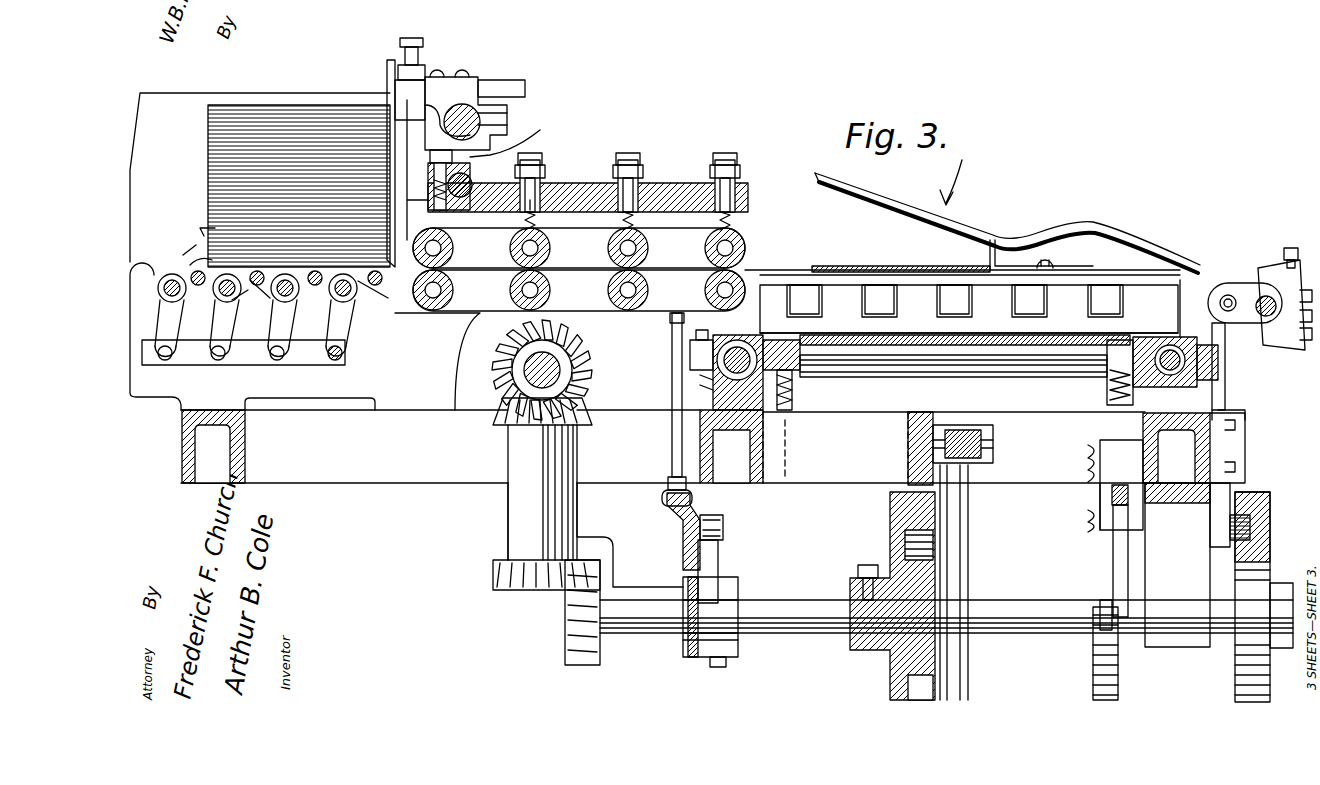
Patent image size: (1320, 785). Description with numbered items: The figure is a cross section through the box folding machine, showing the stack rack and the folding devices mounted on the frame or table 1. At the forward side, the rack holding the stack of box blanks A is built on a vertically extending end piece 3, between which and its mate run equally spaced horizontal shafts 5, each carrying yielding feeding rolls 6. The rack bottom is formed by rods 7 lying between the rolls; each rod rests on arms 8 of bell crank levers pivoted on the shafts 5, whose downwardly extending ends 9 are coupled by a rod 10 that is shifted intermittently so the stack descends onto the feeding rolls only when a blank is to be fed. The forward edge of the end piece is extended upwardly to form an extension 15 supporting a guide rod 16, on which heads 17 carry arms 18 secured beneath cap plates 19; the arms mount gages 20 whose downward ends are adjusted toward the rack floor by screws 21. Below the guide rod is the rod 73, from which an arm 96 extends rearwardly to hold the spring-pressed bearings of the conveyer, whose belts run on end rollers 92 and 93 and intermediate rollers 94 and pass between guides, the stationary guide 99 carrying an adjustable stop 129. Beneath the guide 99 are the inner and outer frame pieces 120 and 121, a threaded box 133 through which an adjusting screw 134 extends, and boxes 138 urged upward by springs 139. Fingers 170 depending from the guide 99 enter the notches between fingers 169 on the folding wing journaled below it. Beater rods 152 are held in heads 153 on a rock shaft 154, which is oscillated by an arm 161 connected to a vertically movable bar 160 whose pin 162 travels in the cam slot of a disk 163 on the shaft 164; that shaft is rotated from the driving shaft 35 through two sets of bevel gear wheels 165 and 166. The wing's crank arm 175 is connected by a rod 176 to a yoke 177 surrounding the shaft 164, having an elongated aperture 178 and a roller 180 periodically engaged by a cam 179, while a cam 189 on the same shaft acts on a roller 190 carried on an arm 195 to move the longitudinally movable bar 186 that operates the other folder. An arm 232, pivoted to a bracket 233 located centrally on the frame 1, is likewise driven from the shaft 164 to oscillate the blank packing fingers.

The frame or table 1 is at (440, 440).
The end piece 3 is at (637, 288).
The box blanks A is at (268, 108).
The shafts 5 is at (170, 283).
The feeding rolls 6 is at (256, 328).
The rods 7 is at (301, 262).
The arms of bell crank levers 8 is at (199, 287).
The downwardly extending ends 9 is at (255, 330).
The rod 10 is at (193, 360).
The upward extensions 15 is at (513, 134).
The guide rod 16 is at (458, 110).
The heads 17 is at (483, 112).
The arms 18 is at (516, 87).
The cap plates 19 is at (446, 72).
The gages 20 is at (393, 85).
The screws 21 is at (412, 42).
The driving shaft 35 is at (520, 365).
The rod 73 is at (460, 200).
The rollers 92 is at (579, 269).
The rollers 93 is at (706, 292).
The rollers 94 is at (608, 250).
The arm 96 is at (578, 200).
The guide 99 is at (752, 270).
The inner frame piece 120 is at (716, 391).
The outer frame piece 121 is at (1202, 345).
The stop 129 is at (988, 252).
The threaded box 133 is at (718, 375).
The adjusting screws 134 is at (973, 373).
The boxes 138 is at (798, 378).
The springs 139 is at (795, 398).
The beater rods 152 is at (1118, 232).
The heads 153 is at (1298, 268).
The rock shaft 154 is at (1267, 318).
The vertically movable bar 160 is at (1226, 392).
The arm 161 is at (1238, 298).
The pin 162 is at (1240, 520).
The disk 163 is at (1252, 568).
The shaft 164 is at (1035, 610).
The bevel gear wheels 165 is at (512, 415).
The bevel gear wheels 166 is at (570, 615).
The fingers 169 is at (969, 309).
The fingers 170 is at (955, 301).
The crank arm 175 is at (672, 320).
The rod 176 is at (668, 445).
The yoke 177 is at (668, 500).
The elongated aperture 178 is at (685, 575).
The cam 179 is at (708, 575).
The pin or roller 180 is at (712, 518).
The longitudinally movable bar 186 is at (1098, 497).
The cam 189 is at (1095, 668).
The roller 190 is at (1105, 600).
The arm 195 is at (1110, 540).
The arm 232 is at (975, 580).
The bracket 233 is at (804, 446).